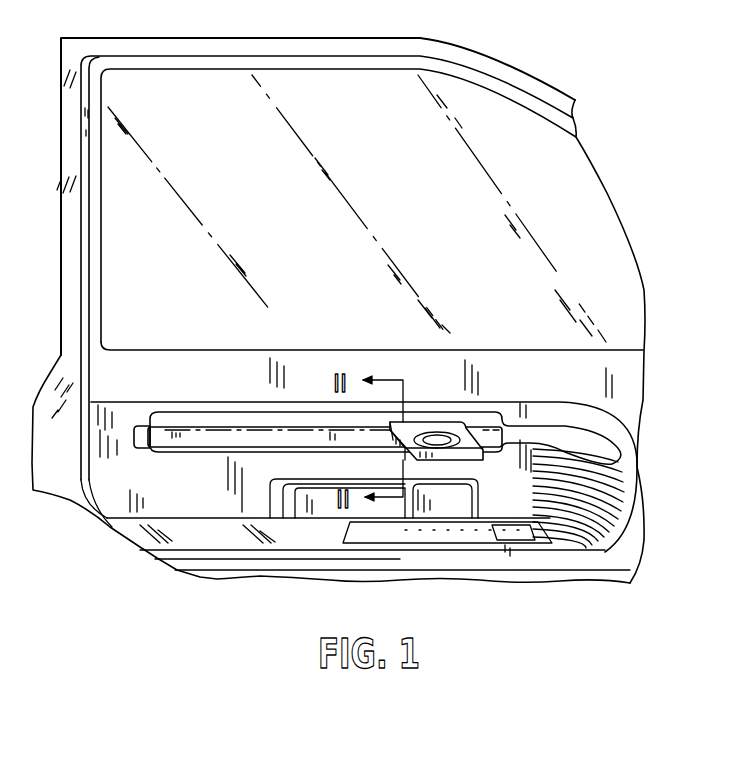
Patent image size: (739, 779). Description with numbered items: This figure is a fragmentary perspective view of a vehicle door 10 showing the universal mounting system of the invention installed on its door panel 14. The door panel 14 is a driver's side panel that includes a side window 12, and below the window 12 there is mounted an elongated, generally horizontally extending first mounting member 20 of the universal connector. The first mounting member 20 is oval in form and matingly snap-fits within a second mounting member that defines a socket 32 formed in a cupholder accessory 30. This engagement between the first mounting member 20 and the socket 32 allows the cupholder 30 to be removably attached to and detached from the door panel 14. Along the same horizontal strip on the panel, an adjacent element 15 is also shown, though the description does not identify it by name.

The vehicle door 10 is at (336, 33).
The side window 12 is at (582, 202).
The door panel 14 is at (617, 418).
The pull strap / bar 15 is at (201, 449).
The first mounting member 20 is at (148, 447).
The cupholder accessory 30 is at (485, 463).
The socket 32 is at (389, 428).